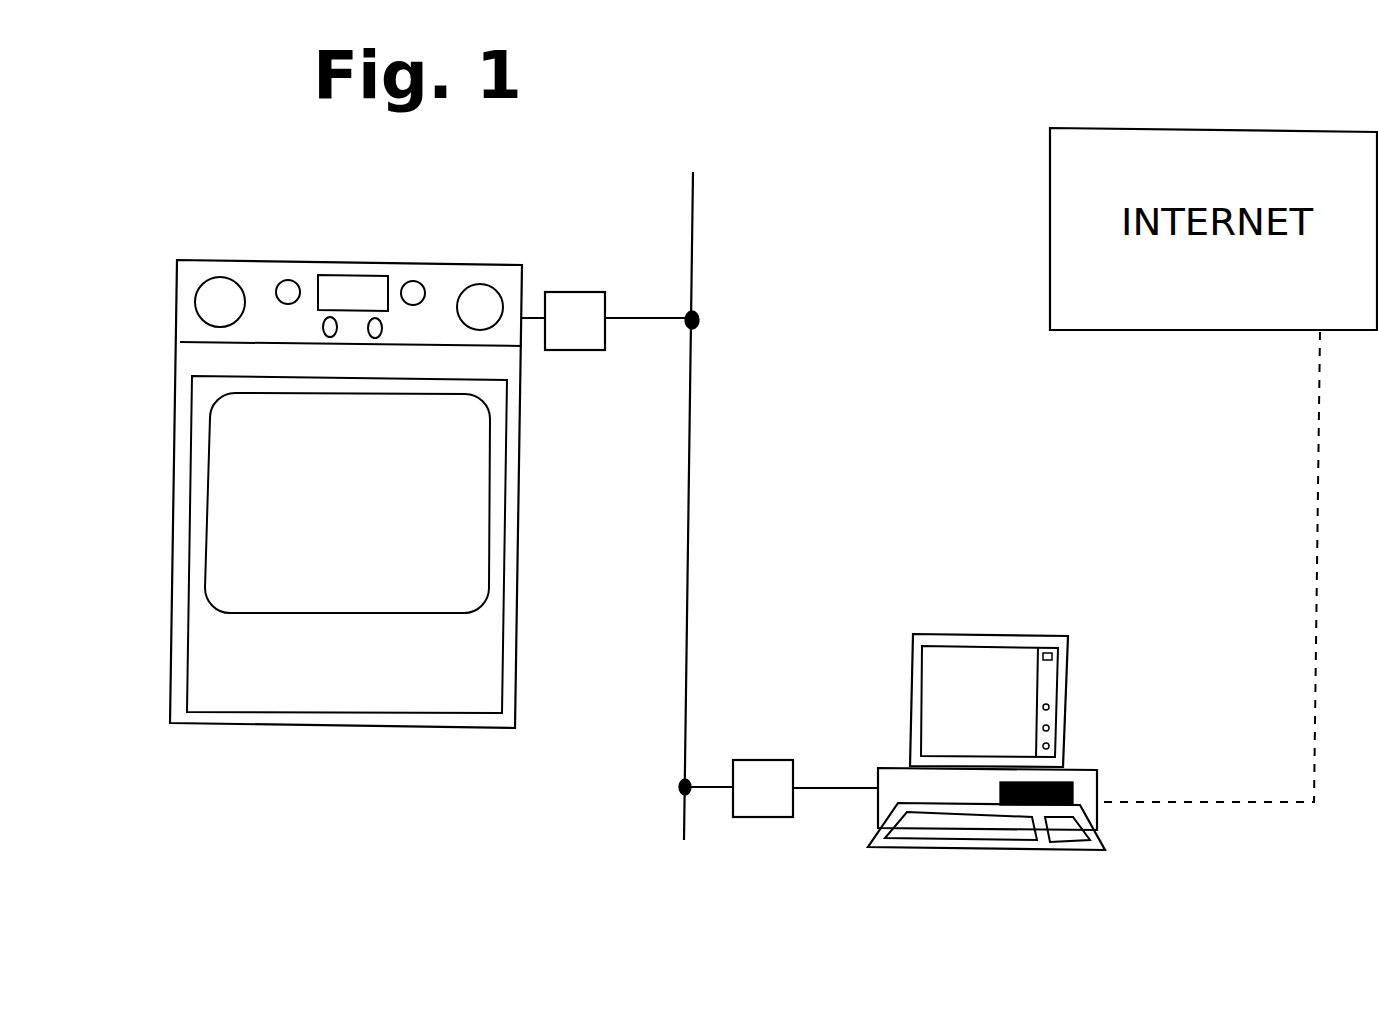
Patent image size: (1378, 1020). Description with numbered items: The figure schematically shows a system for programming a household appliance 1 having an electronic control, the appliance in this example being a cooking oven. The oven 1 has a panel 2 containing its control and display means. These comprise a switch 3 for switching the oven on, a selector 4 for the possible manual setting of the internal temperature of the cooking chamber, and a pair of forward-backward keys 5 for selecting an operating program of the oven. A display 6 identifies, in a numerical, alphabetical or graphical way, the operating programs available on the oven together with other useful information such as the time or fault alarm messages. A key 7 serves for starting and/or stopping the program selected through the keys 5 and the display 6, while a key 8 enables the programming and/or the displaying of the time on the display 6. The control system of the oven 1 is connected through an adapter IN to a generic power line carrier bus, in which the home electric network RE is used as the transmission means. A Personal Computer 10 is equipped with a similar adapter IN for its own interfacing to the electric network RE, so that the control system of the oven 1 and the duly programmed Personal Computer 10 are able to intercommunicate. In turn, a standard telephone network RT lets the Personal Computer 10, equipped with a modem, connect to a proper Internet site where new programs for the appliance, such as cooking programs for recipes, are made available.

The household appliance 1 is at (194, 761).
The panel 2 is at (245, 241).
The switch 3 is at (221, 302).
The selector 4 is at (482, 303).
The pair of keys 5 is at (287, 288).
The display 6 is at (355, 287).
The key 7 is at (322, 323).
The key 8 is at (380, 331).
The Personal Computer 10 is at (889, 662).
The interface adapter IN is at (669, 554).
The home electric network RE is at (702, 248).
The standard telephone network RT is at (1308, 615).